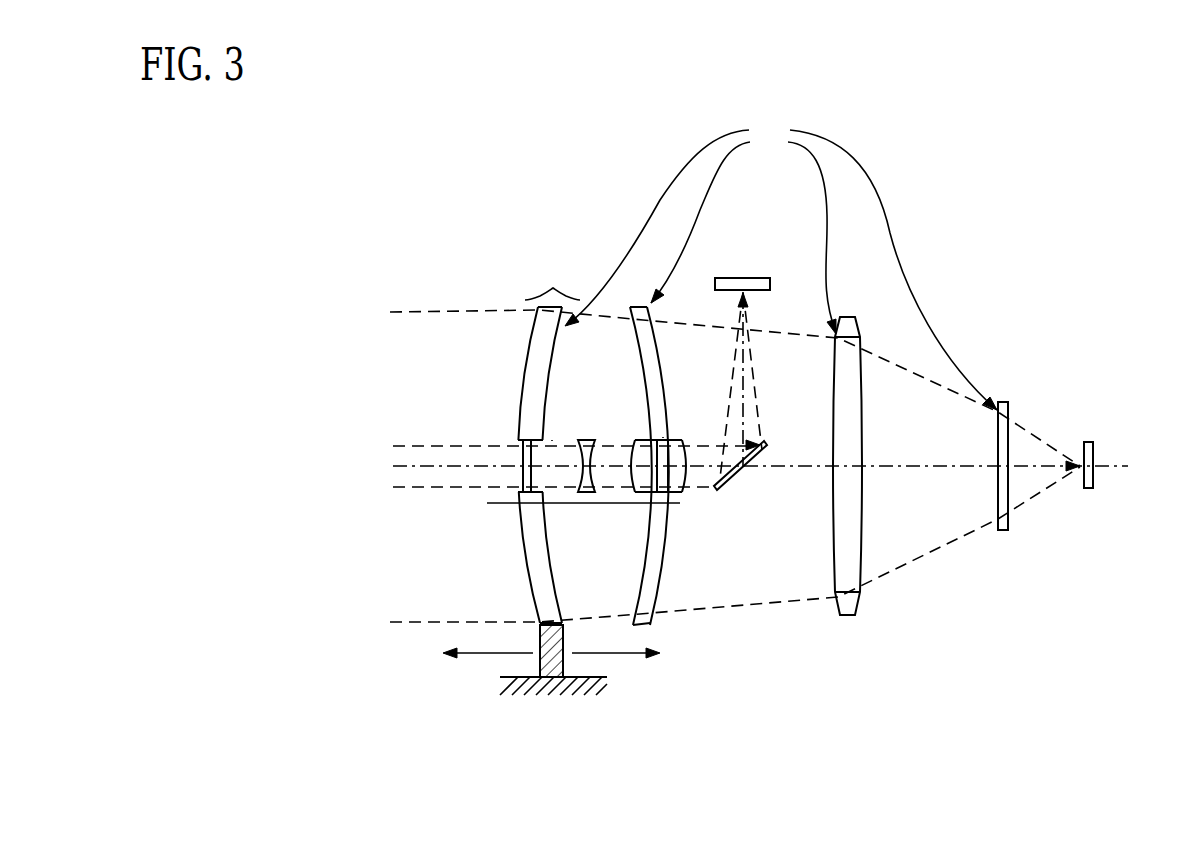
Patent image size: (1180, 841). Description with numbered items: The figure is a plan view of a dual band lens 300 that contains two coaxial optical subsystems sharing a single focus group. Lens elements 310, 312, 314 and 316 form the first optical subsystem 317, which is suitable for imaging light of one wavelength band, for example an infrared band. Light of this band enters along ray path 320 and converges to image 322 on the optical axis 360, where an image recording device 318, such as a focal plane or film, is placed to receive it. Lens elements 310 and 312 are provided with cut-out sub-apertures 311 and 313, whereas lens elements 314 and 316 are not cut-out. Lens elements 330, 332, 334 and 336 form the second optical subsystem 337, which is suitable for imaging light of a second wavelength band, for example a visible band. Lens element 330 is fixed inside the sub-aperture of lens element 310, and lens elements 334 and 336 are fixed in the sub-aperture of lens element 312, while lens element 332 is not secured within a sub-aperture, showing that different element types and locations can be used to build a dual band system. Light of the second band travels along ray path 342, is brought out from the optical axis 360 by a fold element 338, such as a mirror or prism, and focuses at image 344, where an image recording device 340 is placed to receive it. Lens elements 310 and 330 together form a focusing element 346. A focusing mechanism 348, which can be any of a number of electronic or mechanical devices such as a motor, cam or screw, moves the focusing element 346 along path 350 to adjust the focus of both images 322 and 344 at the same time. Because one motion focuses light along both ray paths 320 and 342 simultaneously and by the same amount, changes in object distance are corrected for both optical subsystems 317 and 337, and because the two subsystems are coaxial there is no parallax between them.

The lens 300 is at (1067, 171).
The lens element 310 is at (548, 336).
The cut-out sub-aperture 311 is at (552, 440).
The lens element 312 is at (646, 328).
The cut-out sub-aperture 313 is at (663, 437).
The lens element 314 is at (853, 405).
The lens element 316 is at (1010, 412).
The optical subsystem 317 is at (781, 264).
The image recording device 318 is at (1088, 441).
The ray path 320 is at (388, 313).
The image 322 is at (1078, 468).
The lens element 330 is at (522, 474).
The lens element 332 is at (583, 493).
The lens element 334 is at (643, 493).
The lens element 336 is at (680, 500).
The optical subsystem 337 is at (535, 505).
The fold element 338 is at (733, 470).
The image recording device 340 is at (738, 278).
The ray path 342 is at (437, 446).
The image 344 is at (745, 291).
The focusing element 346 is at (553, 294).
The focusing mechanism 348 is at (577, 678).
The path 350 is at (620, 652).
The optical axis 360 is at (887, 467).